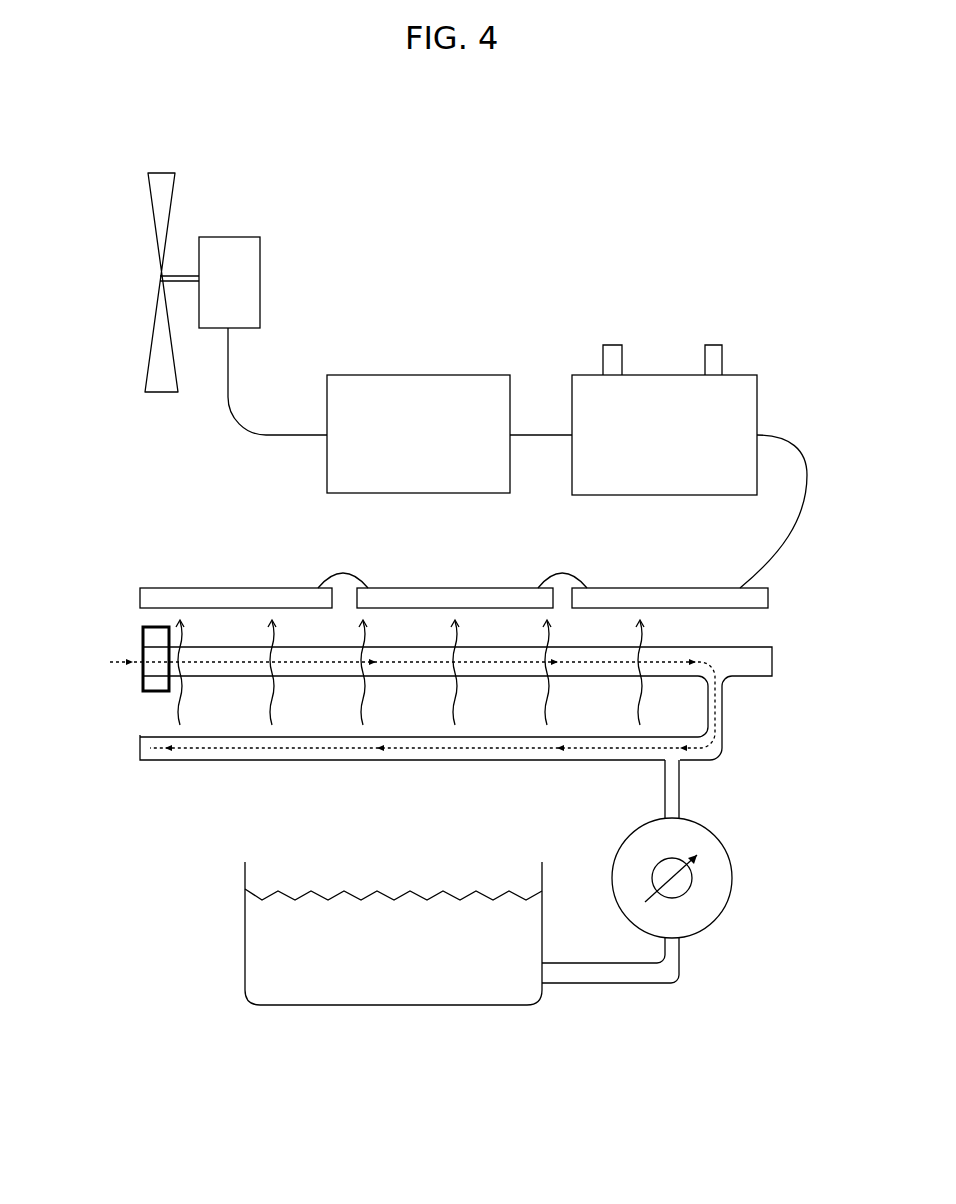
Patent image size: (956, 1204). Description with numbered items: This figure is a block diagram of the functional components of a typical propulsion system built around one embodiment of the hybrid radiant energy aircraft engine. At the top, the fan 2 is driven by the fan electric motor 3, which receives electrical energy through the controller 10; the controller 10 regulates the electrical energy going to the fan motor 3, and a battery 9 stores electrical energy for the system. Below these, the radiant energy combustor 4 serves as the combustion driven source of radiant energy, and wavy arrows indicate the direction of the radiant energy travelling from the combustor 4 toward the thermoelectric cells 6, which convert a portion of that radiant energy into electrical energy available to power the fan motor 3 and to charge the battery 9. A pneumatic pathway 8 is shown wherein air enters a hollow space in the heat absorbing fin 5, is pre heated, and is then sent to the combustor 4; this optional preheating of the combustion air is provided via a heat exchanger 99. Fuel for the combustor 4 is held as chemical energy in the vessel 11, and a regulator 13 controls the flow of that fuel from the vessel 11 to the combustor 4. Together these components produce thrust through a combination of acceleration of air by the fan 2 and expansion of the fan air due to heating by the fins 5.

The fan 2 is at (152, 343).
The fan electric motor 3 is at (262, 283).
The radiant energy combustor 4 is at (277, 760).
The heat absorbing fin 5 is at (248, 676).
The thermoelectric cells 6 is at (218, 588).
The pneumatic pathway 8 is at (119, 682).
The battery 9 is at (638, 372).
The controller 10 is at (400, 375).
The vessel 11 is at (245, 934).
The regulator 13 is at (735, 878).
The heat exchanger 99 is at (152, 692).